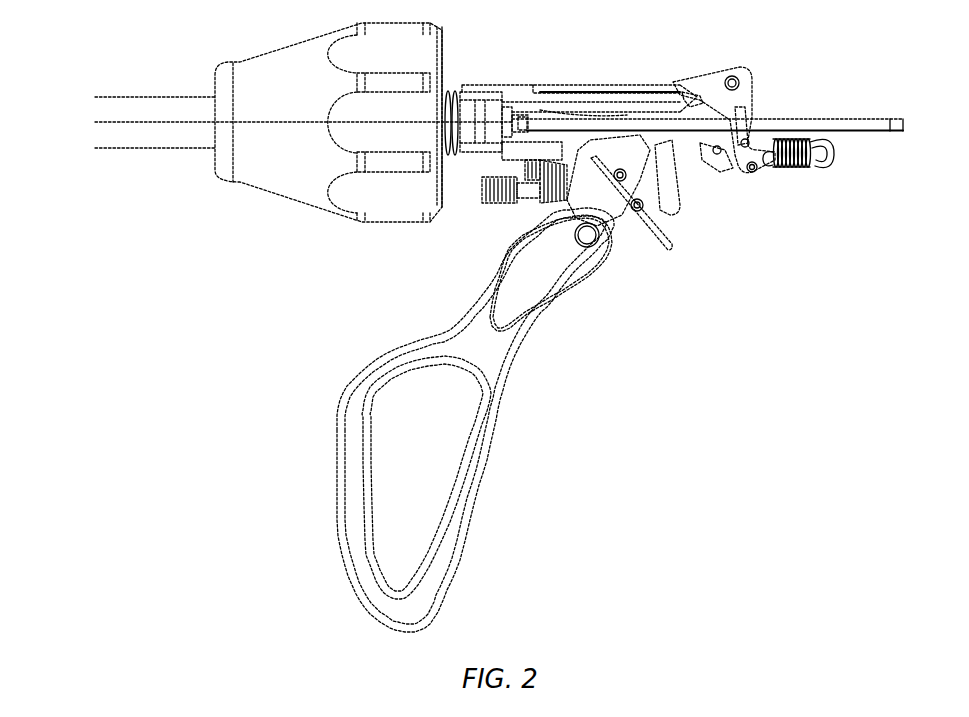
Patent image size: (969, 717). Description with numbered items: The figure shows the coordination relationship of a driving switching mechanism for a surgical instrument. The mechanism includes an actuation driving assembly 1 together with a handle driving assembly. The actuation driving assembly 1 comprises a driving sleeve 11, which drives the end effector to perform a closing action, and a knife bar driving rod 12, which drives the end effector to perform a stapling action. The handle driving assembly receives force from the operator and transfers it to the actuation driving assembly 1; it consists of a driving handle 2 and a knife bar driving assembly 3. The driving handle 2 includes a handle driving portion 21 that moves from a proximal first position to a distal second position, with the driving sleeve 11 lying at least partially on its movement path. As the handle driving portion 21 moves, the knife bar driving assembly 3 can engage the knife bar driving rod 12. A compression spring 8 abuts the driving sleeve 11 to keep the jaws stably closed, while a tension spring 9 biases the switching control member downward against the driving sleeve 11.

The actuation driving assembly 1 is at (505, 82).
The driving handle 2 is at (325, 393).
The knife bar driving assembly 3 is at (765, 87).
The compression spring 8 is at (455, 90).
The tension spring 9 is at (783, 172).
The driving sleeve 11 is at (473, 157).
The knife bar driving rod 12 is at (853, 128).
The handle driving portion 21 is at (598, 165).